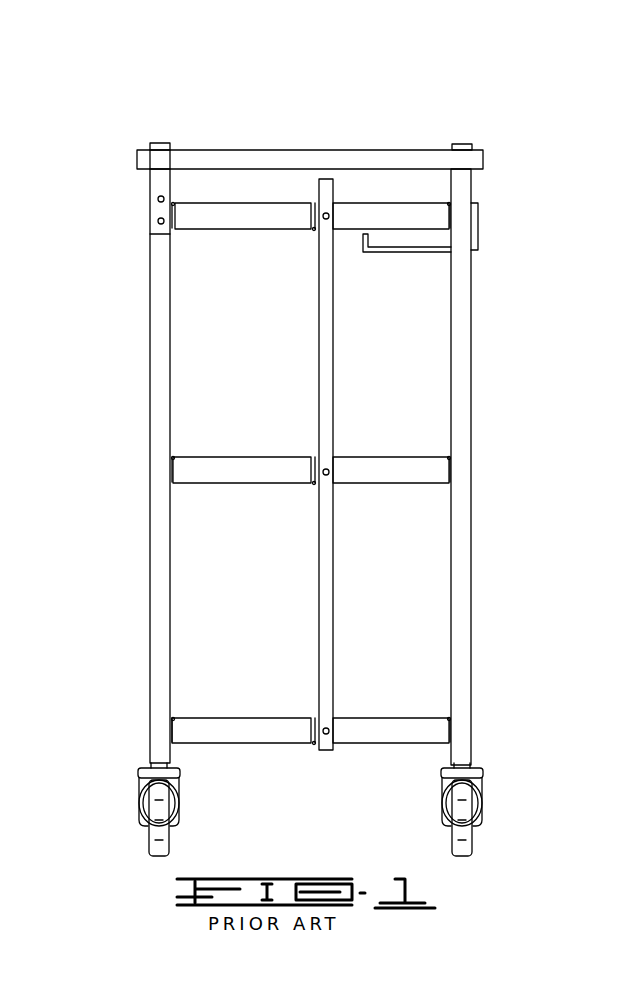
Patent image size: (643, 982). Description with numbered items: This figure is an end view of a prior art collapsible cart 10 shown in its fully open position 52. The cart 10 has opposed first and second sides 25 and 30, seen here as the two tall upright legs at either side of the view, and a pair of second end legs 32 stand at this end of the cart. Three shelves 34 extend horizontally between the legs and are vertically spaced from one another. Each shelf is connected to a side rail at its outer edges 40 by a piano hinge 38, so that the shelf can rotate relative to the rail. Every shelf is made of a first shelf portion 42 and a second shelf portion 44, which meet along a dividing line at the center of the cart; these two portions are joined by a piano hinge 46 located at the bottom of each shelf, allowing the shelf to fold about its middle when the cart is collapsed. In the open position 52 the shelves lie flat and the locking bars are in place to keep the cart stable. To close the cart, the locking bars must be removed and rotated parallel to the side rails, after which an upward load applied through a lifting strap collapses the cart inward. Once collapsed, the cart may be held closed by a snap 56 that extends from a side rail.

The collapsible cart 10 is at (498, 193).
The first side 25 is at (472, 397).
The second side 30 is at (150, 470).
The second end legs 32 is at (150, 567).
The shelves 34 is at (313, 440).
The piano hinge 38 is at (175, 203).
The outer edges 40 is at (173, 213).
The first shelf portion 42 is at (370, 213).
The second shelf portion 44 is at (228, 215).
The piano hinge 46 is at (313, 232).
The open position 52 is at (481, 321).
The snap 56 is at (410, 253).